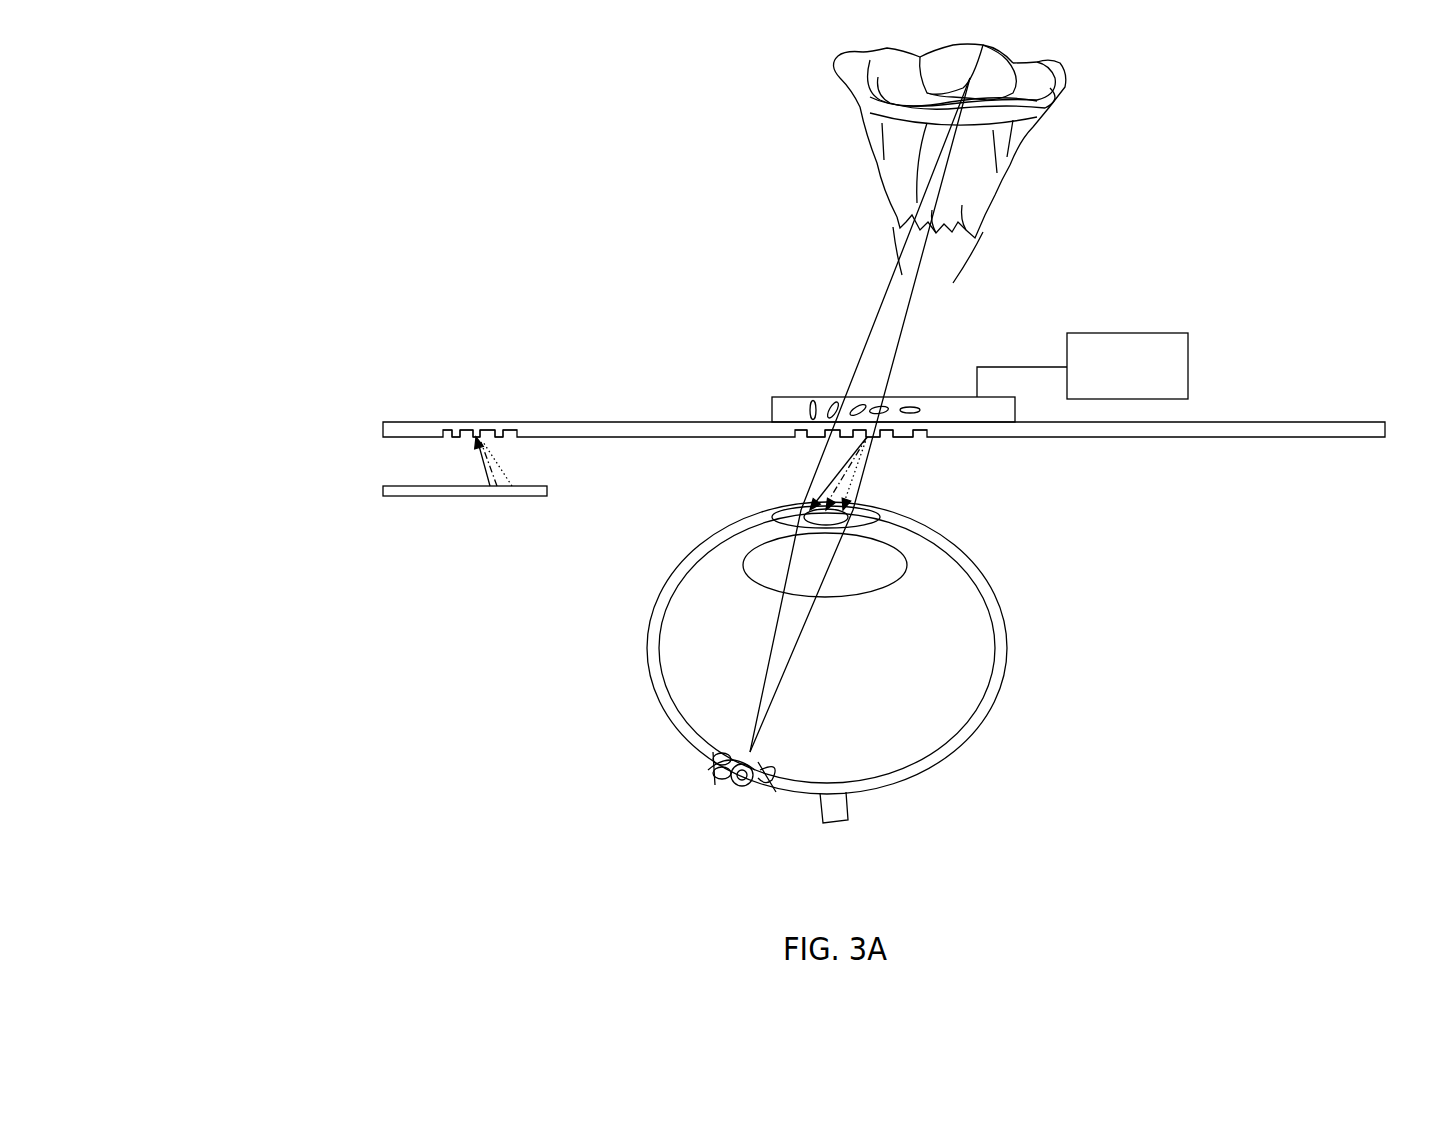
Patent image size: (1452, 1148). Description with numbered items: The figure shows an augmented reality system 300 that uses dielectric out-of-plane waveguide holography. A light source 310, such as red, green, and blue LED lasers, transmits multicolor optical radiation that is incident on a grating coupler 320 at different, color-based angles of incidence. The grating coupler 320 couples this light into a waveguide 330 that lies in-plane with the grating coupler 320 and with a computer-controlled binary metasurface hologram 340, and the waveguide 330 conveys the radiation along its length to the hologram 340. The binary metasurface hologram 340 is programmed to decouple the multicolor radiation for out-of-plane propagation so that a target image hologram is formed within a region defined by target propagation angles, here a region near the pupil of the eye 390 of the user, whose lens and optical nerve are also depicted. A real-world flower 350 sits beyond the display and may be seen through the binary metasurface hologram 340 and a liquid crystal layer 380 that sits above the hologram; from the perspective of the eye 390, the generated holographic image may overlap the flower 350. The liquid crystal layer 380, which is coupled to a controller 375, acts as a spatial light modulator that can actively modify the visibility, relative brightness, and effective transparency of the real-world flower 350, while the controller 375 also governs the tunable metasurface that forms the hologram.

The augmented reality system 300 is at (268, 102).
The light source 310 is at (413, 496).
The grating coupler 320 is at (443, 438).
The waveguide 330 is at (647, 420).
The binary metasurface hologram 340 is at (810, 453).
The flower 350 is at (818, 96).
The controller 375 is at (1143, 391).
The liquid crystal layer 380 is at (779, 395).
The eye 390 is at (627, 685).